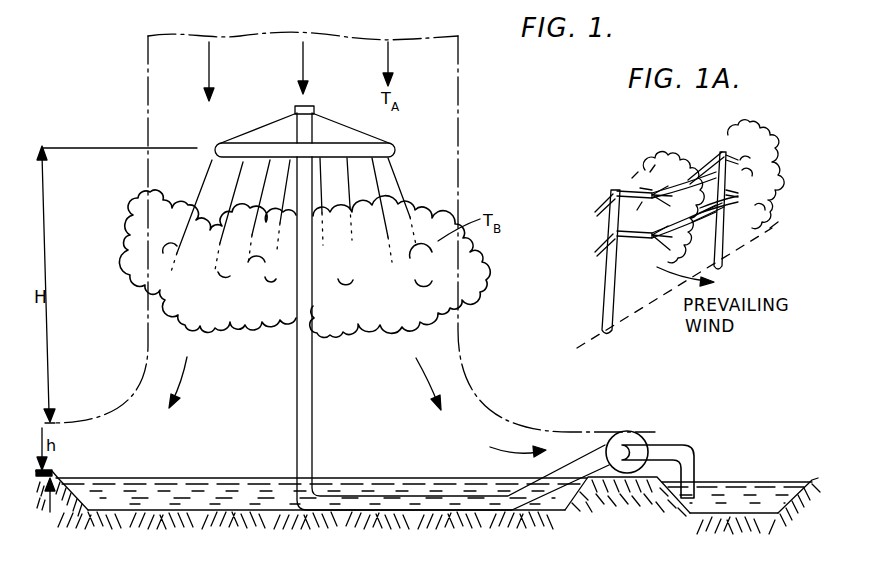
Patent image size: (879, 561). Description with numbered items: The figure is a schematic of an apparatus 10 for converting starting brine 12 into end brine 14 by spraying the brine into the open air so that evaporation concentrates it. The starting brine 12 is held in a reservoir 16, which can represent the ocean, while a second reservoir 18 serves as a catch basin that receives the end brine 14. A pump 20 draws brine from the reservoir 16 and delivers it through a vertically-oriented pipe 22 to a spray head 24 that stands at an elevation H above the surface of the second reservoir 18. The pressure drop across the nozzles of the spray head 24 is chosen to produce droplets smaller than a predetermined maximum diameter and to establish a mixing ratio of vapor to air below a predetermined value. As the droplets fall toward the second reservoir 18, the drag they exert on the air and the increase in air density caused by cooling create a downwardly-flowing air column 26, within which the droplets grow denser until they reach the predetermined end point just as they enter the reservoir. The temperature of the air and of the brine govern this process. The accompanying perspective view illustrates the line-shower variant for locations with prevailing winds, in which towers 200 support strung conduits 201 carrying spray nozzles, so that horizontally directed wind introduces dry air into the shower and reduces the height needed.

In FIG. 1, the apparatus 10 is at (486, 182).
In FIG. 1, the starting brine 12 is at (712, 482).
In FIG. 1, the end brine 14 is at (195, 483).
In FIG. 1, the reservoir 16 is at (812, 481).
In FIG. 1, the second reservoir 18 is at (54, 476).
In FIG. 1, the pump 20 is at (633, 440).
In FIG. 1, the vertically-oriented pipe 22 is at (312, 414).
In FIG. 1, the spray head 24 is at (395, 150).
In FIG. 1, the downwardly-flowing air column 26 is at (458, 330).
In FIG. 1A, the utility pole 200 is at (606, 296).
In FIG. 1A, the power lines 201 is at (630, 183).